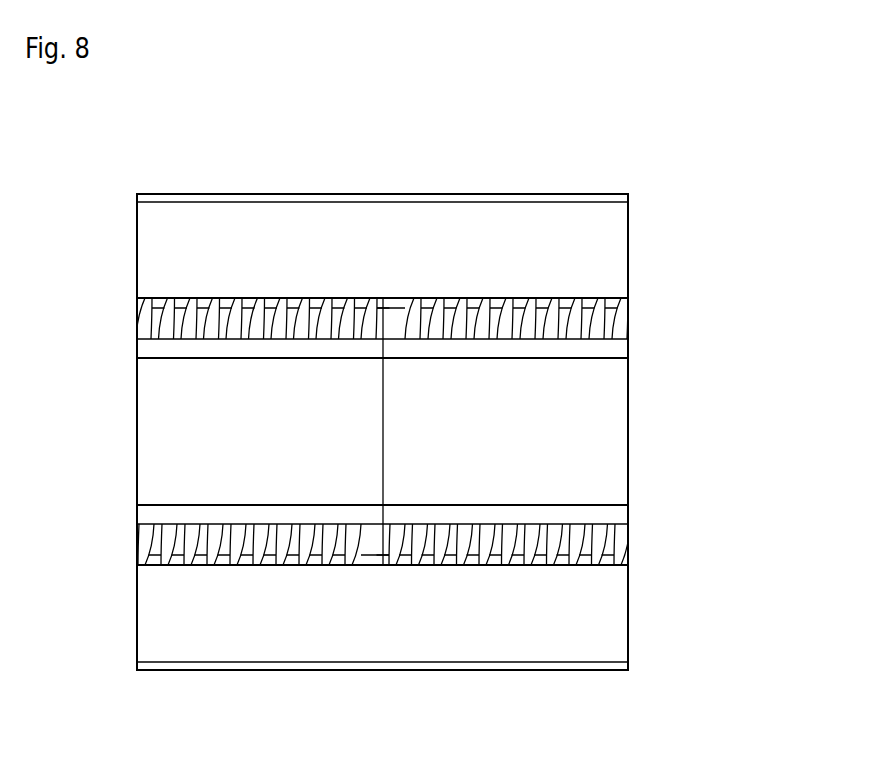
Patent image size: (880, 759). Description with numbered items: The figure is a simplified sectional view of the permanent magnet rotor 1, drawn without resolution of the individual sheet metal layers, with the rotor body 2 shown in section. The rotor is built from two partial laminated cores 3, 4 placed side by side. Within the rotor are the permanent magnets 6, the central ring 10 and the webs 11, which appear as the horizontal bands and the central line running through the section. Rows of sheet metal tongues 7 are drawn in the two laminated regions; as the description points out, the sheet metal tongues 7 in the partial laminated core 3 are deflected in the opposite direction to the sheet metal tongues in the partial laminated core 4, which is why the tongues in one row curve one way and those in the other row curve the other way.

The rotor 1 is at (647, 102).
The rotor body 2 is at (380, 678).
The partial laminated core 3 is at (247, 193).
The partial laminated core 4 is at (496, 193).
The permanent magnets 6 is at (603, 245).
The sheet metal tongues 7 is at (150, 318).
The central ring 10 is at (152, 348).
The webs 11 is at (624, 321).